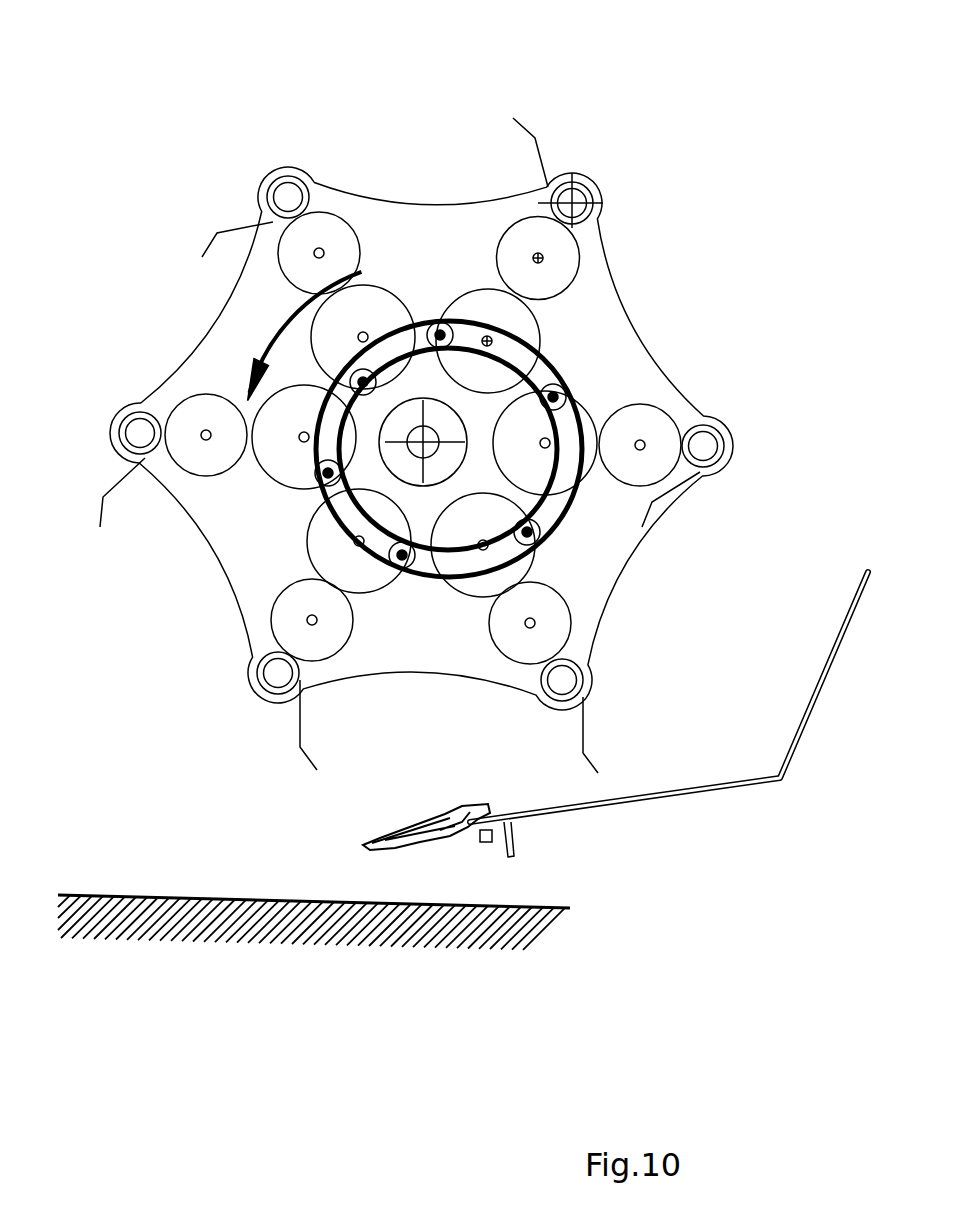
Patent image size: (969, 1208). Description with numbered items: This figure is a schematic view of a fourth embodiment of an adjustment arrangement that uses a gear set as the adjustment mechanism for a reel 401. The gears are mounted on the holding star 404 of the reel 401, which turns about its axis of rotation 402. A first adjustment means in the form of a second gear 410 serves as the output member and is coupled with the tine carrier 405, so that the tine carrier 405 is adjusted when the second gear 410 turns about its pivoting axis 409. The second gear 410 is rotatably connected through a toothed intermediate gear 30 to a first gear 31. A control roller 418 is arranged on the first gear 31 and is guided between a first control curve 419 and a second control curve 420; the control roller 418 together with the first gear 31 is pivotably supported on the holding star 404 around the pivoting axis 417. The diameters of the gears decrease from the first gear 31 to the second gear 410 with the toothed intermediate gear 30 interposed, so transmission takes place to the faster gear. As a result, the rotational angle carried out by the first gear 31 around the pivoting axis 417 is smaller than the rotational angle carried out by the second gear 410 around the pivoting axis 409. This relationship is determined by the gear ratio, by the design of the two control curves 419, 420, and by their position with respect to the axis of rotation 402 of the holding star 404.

The reel 401 is at (447, 103).
The axis of rotation 402 is at (428, 446).
The holding star 404 is at (416, 445).
The tine carrier 405 is at (592, 212).
The pivoting axis 409 is at (590, 186).
The second gear 410 is at (569, 178).
The toothed intermediate gear 30 is at (563, 273).
The first gear 31 is at (525, 363).
The pivoting axis 417 is at (497, 338).
The control roller 418 is at (441, 322).
The first control curve 419 is at (573, 505).
The second control curve 420 is at (537, 507).